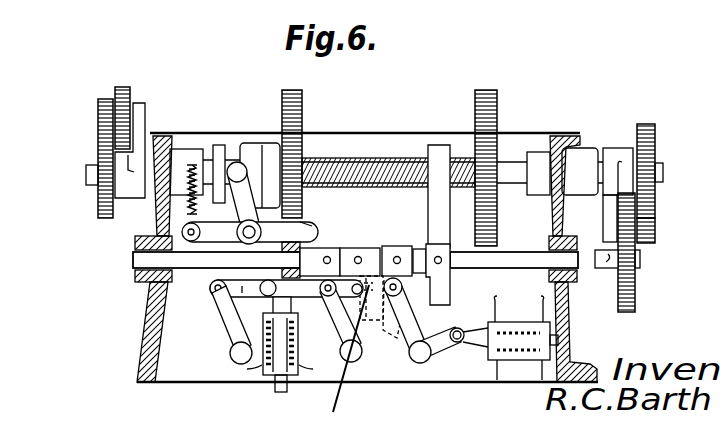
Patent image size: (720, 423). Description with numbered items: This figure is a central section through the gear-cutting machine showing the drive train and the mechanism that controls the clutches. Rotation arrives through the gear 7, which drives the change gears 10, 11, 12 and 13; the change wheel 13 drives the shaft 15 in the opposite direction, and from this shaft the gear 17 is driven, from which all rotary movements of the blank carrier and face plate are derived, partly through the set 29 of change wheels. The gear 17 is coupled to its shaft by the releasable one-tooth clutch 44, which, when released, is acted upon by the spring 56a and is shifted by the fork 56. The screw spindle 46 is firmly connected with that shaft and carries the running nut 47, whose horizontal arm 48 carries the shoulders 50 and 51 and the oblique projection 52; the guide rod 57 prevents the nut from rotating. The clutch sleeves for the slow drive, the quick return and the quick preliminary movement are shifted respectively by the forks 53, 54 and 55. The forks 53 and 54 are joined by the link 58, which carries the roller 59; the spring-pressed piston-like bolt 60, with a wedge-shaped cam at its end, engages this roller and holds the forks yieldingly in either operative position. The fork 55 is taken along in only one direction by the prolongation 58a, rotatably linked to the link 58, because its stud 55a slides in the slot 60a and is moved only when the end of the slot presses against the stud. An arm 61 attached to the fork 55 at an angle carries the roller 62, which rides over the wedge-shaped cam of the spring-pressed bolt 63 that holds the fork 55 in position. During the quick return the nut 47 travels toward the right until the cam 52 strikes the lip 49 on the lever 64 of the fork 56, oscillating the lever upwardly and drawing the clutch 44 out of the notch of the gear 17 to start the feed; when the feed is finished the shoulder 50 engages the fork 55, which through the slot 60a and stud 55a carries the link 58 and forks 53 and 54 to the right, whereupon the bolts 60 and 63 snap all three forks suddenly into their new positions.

The gear 7 is at (485, 138).
The change gear 10 is at (648, 148).
The change gear 11 is at (655, 219).
The change gear 12 is at (620, 206).
The change gear 13 is at (630, 291).
The shaft 15 is at (612, 261).
The gear 17 is at (290, 140).
The set of change wheels 29 is at (107, 153).
The one-tooth clutch 44 is at (217, 153).
The screw spindle 46 is at (347, 168).
The running nut 47 is at (442, 152).
The horizontal arm 48 is at (397, 257).
The lip 49 is at (317, 238).
The shoulder 50 is at (374, 307).
The shoulder 51 is at (438, 280).
The oblique projection 52 is at (319, 239).
The fork 53 is at (230, 325).
The fork 54 is at (338, 332).
The fork 55 is at (408, 313).
The stud 55a is at (403, 290).
The fork 56 is at (240, 197).
The spring 56a is at (190, 207).
The guide rod 57 is at (515, 259).
The link 58 is at (213, 290).
The prolongation 58a is at (351, 354).
The roller 59 is at (270, 293).
The spring-pressed piston-like bolt 60 is at (281, 311).
The slot 60a is at (390, 322).
The arm 61 is at (430, 358).
The roller 62 is at (461, 343).
The spring-pressed bolt 63 is at (460, 332).
The lever 64 is at (293, 228).